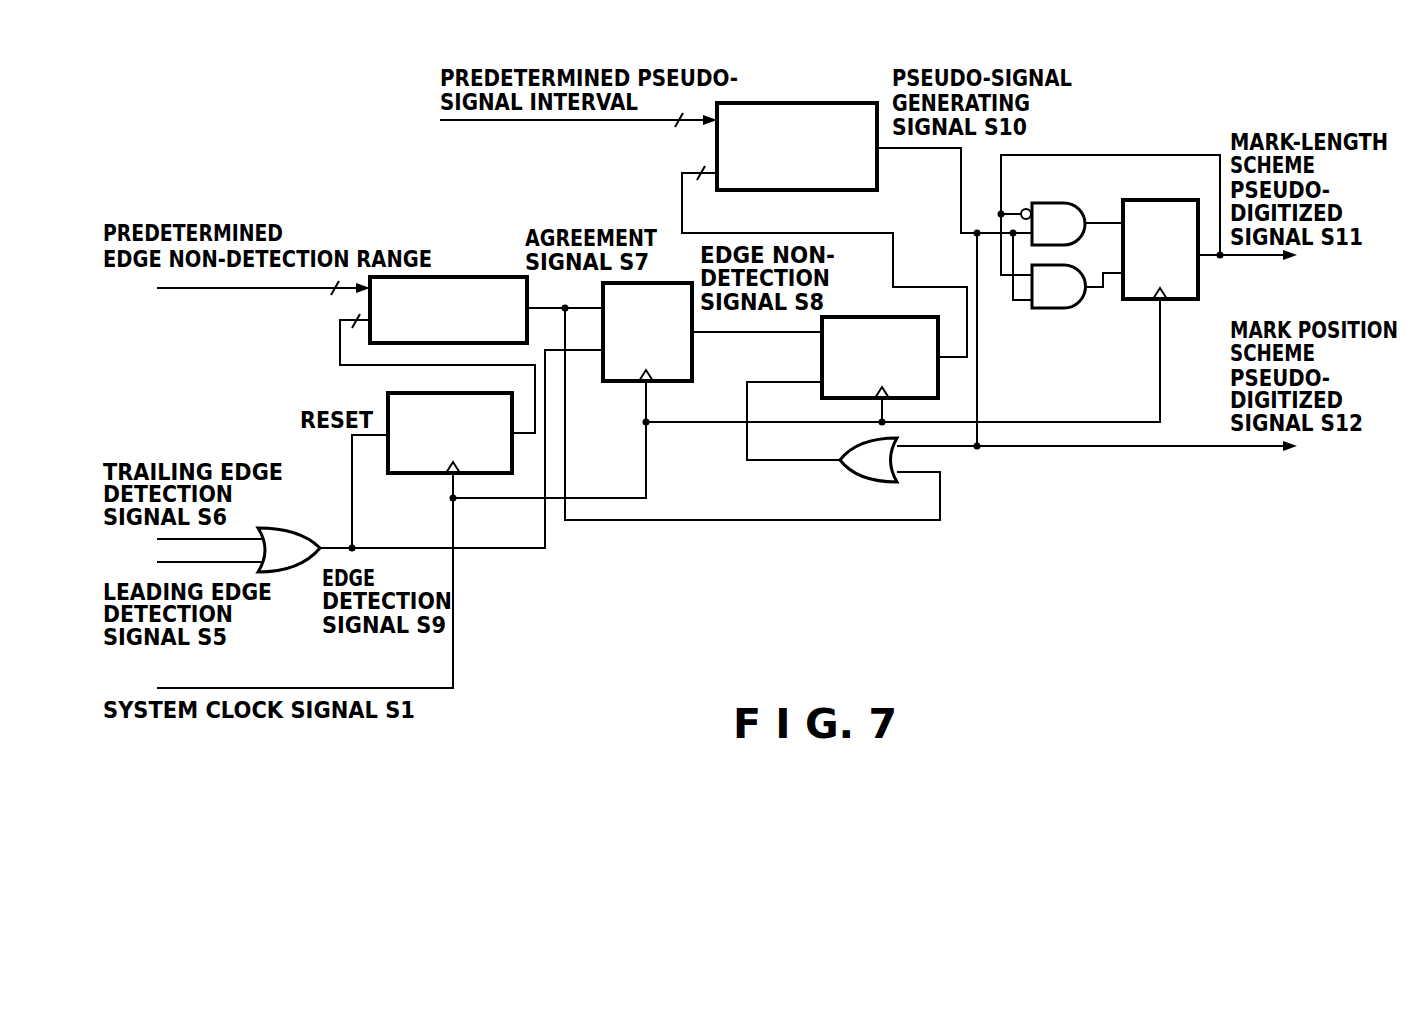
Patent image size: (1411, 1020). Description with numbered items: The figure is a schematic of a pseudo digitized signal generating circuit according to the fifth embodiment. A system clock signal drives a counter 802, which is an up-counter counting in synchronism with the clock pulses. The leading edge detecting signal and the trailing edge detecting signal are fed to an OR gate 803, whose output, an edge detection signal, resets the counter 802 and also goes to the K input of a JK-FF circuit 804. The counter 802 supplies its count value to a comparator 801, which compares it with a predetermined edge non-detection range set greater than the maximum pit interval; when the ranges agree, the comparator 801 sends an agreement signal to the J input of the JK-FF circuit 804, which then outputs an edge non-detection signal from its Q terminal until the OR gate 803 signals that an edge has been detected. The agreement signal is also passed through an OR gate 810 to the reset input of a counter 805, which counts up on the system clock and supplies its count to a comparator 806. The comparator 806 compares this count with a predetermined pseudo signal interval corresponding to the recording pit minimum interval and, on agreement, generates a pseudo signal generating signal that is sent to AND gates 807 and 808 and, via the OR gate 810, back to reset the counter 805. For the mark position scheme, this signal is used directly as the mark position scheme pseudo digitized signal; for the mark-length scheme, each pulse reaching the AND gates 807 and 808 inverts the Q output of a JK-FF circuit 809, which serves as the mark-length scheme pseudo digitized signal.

The comparator 801 is at (475, 277).
The counter 802 is at (418, 473).
The OR gate 803 is at (305, 528).
The JK-FF circuit 804 is at (613, 383).
The counter 805 is at (818, 396).
The comparator 806 is at (800, 103).
The AND gate 807 is at (1047, 203).
The AND gate 808 is at (1052, 310).
The JK-FF circuit 809 is at (1135, 301).
The OR gate 810 is at (845, 482).